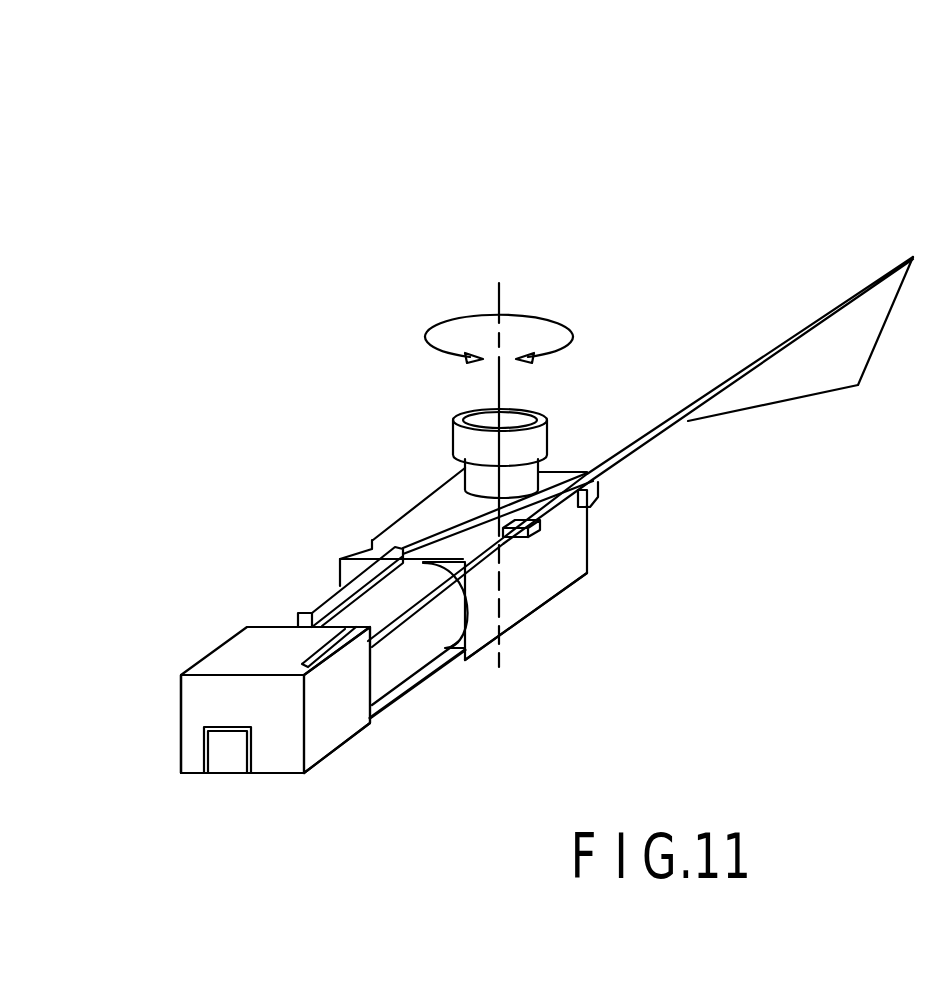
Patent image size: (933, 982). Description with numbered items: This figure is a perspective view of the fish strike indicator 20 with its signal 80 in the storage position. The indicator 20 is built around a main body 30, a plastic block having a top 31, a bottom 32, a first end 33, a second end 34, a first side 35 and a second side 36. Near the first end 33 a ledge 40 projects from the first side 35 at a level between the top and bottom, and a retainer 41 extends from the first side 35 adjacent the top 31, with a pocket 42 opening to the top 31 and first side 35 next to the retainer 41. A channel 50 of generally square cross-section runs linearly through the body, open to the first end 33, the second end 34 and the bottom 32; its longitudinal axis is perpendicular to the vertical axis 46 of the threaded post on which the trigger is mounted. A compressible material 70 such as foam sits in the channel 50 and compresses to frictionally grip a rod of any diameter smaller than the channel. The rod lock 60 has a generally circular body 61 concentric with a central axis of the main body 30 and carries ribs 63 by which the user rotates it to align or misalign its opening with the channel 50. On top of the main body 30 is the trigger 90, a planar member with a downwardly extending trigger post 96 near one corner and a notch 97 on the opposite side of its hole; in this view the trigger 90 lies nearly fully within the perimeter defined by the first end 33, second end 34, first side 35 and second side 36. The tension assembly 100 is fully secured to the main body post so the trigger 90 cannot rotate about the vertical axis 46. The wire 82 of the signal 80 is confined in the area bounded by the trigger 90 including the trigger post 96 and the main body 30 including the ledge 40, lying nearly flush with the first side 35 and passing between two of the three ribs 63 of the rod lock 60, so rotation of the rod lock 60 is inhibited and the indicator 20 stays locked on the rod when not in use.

The indicator 20 is at (582, 220).
The main body 30 is at (477, 653).
The top 31 is at (238, 648).
The bottom 32 is at (188, 775).
The first end 33 is at (588, 545).
The second end 34 is at (208, 693).
The first side 35 is at (325, 720).
The second side 36 is at (180, 748).
The ledge 40 is at (595, 507).
The retainer 41 is at (560, 587).
The pocket 42 is at (596, 474).
The vertical axis 46 is at (493, 300).
The channel 50 is at (252, 748).
The rod lock 60 is at (337, 587).
The body 61 is at (383, 667).
The ribs 63 is at (397, 700).
The compressible material 70 is at (225, 755).
The signal 80 is at (777, 347).
The wire 82 is at (667, 433).
The trigger 90 is at (420, 505).
The trigger post 96 is at (597, 483).
The notch 97 is at (367, 542).
The tension assembly 100 is at (547, 415).